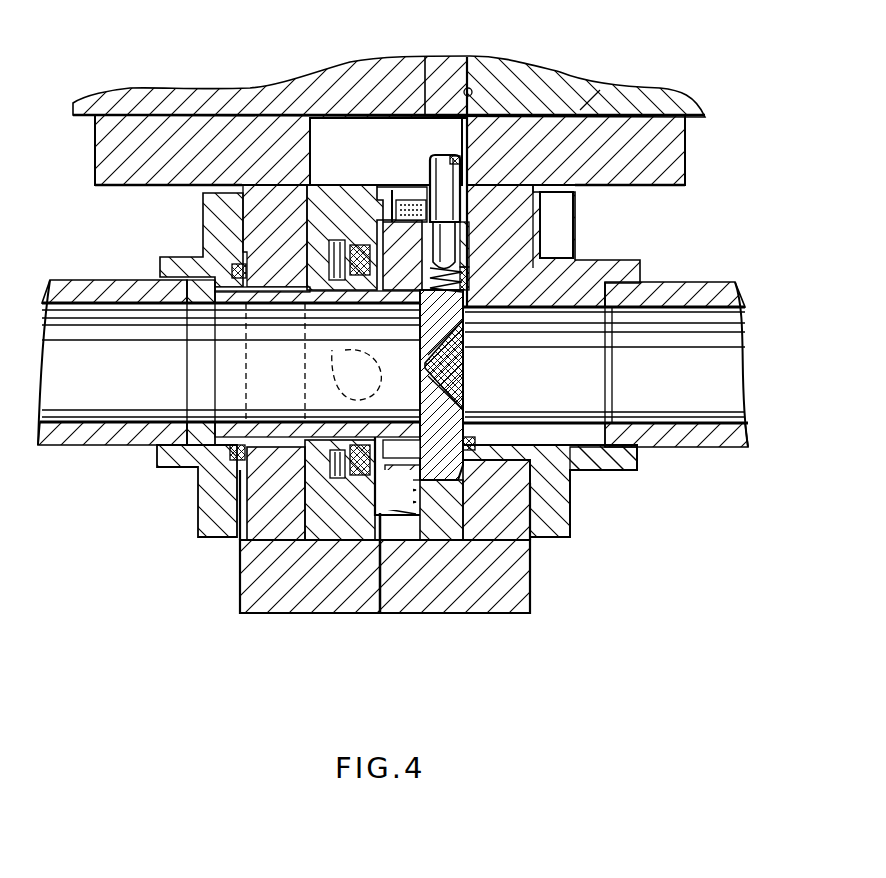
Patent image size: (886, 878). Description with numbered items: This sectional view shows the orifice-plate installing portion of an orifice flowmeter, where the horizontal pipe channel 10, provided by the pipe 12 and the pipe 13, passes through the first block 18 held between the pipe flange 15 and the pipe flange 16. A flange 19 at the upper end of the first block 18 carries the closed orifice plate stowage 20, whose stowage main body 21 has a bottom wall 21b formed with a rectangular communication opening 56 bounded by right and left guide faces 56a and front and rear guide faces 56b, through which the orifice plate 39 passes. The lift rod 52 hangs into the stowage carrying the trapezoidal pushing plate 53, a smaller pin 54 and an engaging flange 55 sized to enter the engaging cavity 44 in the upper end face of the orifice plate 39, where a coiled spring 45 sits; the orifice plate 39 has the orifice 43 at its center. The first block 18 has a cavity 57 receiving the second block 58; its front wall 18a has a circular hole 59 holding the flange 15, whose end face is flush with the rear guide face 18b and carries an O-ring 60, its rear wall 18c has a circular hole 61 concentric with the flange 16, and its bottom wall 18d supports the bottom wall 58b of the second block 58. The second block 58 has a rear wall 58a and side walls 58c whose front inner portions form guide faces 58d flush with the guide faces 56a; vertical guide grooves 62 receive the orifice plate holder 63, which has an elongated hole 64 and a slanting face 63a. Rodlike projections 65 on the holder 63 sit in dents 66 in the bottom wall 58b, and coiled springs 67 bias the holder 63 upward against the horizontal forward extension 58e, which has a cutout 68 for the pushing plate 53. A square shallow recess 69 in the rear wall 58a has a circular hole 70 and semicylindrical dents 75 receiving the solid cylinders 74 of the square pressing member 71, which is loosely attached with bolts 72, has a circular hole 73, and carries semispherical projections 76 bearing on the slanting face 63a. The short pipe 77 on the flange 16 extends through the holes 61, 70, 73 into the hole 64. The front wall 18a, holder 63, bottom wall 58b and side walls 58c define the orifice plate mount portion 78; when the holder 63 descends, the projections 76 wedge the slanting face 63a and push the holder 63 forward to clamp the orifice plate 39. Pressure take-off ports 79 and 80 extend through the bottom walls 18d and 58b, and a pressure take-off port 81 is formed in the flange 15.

The horizontal pipe channel 10 is at (107, 337).
The pipe 12 is at (722, 449).
The pipe 13 is at (87, 447).
The pipe flange 15 is at (562, 540).
The pipe flange 16 is at (207, 540).
The first block 18 is at (247, 613).
The front wall 18a is at (555, 500).
The rear surface (guide face) 18b is at (530, 560).
The rear wall 18c is at (215, 473).
The bottom wall 18d is at (410, 600).
The flange 19 is at (675, 157).
The orifice plate stowage 20 is at (712, 120).
The stowage main body 21 is at (673, 95).
The bottom wall 21b is at (595, 95).
The orifice plate 39 is at (466, 367).
The orifice 43 is at (453, 383).
The engaging cavity 44 is at (468, 250).
The coiled spring 45 is at (444, 357).
The lift rod 52 is at (455, 190).
The pushing plate 53 is at (410, 203).
The pin 54 is at (470, 238).
The engaging flange 55 is at (467, 268).
The communication opening 56 is at (472, 93).
The guide faces 56a is at (423, 90).
The guide faces 56b is at (462, 88).
The cavity 57 is at (287, 557).
The second block 58 is at (317, 530).
The rear wall 58a is at (263, 497).
The bottom wall 58b is at (392, 580).
The side walls 58c is at (357, 123).
The guide faces 58d is at (450, 135).
The horizontal forward extension 58e is at (390, 192).
The circular hole 59 is at (560, 283).
The O-ring 60 is at (468, 442).
The circular hole 61 is at (273, 290).
The vertical guide groove 62 is at (380, 210).
The orifice plate holder 63 is at (387, 231).
The slanting face 63a is at (334, 388).
The hole 64 is at (402, 255).
The rodlike projection 65 is at (412, 525).
The dent 66 is at (440, 520).
The coiled spring 67 is at (443, 517).
The cutout 68 is at (398, 205).
The square shallow recess 69 is at (325, 450).
The circular hole 70 is at (283, 307).
The pressing member 71 is at (355, 490).
The bolts 72 is at (310, 245).
The circular hole 73 is at (297, 330).
The short vertical solid cylinders 74 is at (303, 202).
The semicylindrical dents 75 is at (305, 223).
The semispherical projection 76 is at (342, 357).
The short pipe 77 is at (225, 437).
The orifice plate mount portion 78 is at (482, 383).
The pressure take-off port 79 is at (382, 578).
The pressure take-off port 80 is at (380, 531).
The pressure take-off port 81 is at (600, 450).